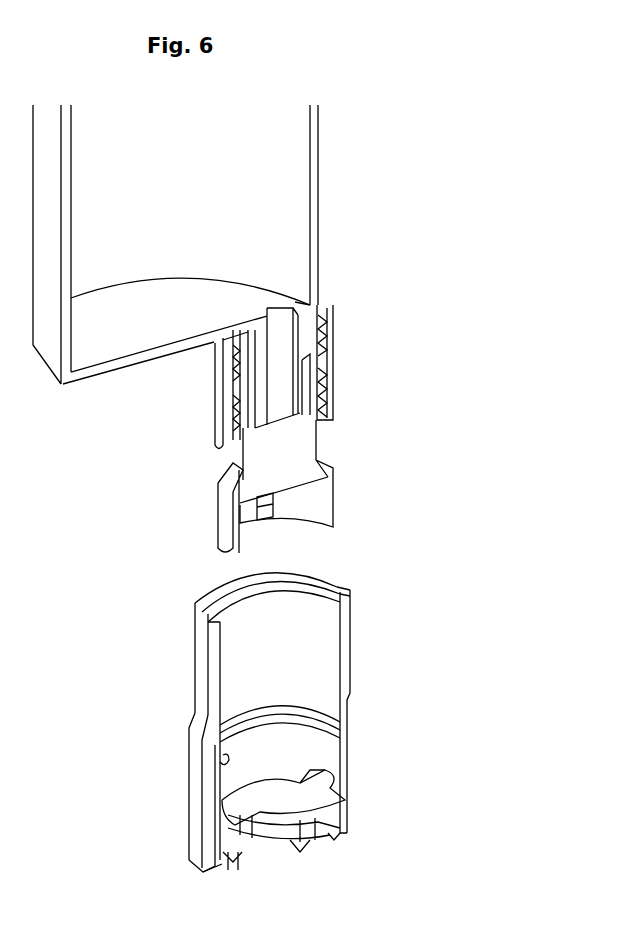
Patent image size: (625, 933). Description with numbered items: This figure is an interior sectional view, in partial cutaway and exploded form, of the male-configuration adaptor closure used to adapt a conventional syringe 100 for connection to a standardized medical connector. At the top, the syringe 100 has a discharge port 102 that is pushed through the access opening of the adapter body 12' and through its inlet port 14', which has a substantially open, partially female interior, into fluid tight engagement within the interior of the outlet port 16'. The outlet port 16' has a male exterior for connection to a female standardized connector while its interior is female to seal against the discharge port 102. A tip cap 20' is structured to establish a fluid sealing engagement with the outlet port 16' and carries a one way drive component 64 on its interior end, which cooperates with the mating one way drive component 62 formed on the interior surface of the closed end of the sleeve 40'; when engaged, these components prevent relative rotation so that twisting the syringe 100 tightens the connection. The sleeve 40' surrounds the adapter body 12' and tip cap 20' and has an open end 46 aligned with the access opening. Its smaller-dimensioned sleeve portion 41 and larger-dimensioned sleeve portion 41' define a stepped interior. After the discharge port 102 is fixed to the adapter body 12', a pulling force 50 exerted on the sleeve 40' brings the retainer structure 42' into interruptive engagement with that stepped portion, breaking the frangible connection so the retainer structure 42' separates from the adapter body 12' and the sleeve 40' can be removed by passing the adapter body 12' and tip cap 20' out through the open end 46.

The syringe 100 is at (318, 158).
The discharge port 102 is at (310, 307).
The adapter body 12' is at (358, 362).
The inlet port 14' is at (209, 389).
The outlet port 16' is at (196, 380).
The tip cap 20' is at (331, 430).
The one way drive component 64 is at (252, 518).
The open end 46 is at (330, 576).
The sleeve portion 41 is at (317, 725).
The retainer structure 42' is at (330, 724).
The sleeve 40' is at (317, 792).
The sleeve portion 41' is at (383, 817).
The one way drive component 62 is at (310, 803).
The pulling force 50 is at (292, 868).